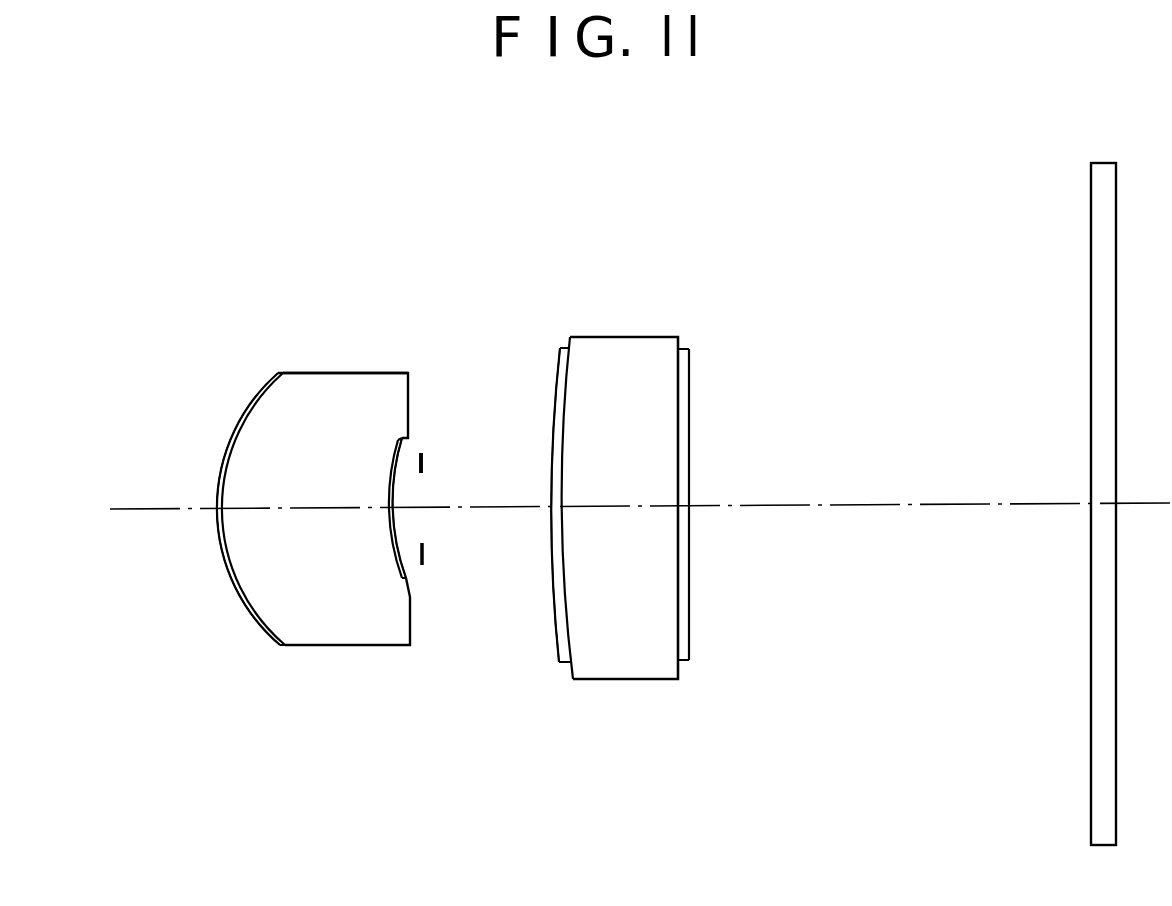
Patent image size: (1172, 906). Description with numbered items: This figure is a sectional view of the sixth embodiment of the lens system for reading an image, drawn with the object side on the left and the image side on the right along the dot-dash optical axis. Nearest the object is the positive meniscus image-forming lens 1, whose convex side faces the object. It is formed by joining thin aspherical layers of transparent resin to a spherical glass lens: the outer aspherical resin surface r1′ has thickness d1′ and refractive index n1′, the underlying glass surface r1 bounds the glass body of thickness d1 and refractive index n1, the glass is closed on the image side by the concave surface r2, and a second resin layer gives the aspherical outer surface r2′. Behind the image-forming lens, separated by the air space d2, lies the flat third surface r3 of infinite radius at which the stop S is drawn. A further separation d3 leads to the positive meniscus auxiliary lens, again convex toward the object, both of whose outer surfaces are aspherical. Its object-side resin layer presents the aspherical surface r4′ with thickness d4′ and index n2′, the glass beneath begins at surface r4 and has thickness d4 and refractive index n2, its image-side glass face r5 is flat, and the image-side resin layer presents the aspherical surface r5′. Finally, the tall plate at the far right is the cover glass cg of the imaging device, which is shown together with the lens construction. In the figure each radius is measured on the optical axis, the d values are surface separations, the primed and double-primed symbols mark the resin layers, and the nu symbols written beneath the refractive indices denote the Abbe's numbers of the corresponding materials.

The first lens 1 is at (336, 392).
The radius of curvature of object-side resin layer surface of image-forming lens r1′ is at (240, 418).
The radius of curvature of first surface r1 is at (260, 400).
The radius of curvature of second surface r2 is at (392, 455).
The radius of curvature of image-side resin layer surface of image-forming lens r2′ is at (410, 455).
The radius of curvature of third surface r3 is at (424, 455).
The radius of curvature of object-side resin layer surface of auxiliary lens r4′ is at (557, 377).
The radius of curvature of fourth surface r4 is at (575, 372).
The radius of curvature of fifth surface r5 is at (681, 372).
The radius of curvature of image-side resin layer surface of auxiliary lens r5′ is at (688, 398).
The refractive index of object-side resin layer of first lens n1′ is at (224, 455).
The refractive index of first lens n1 is at (346, 509).
The refractive index of object-side resin layer of second lens n2′ is at (557, 467).
The refractive index of second lens n2 is at (624, 508).
The thickness of object-side resin layer of first lens d1′ is at (217, 512).
The thickness of first lens d1 is at (317, 510).
The surface separation between image-forming lens and third surface d2 is at (408, 515).
The surface separation between third surface and auxiliary lens d3 is at (502, 510).
The thickness of object-side resin layer of second lens d4′ is at (558, 530).
The thickness of second lens d4 is at (627, 510).
The aperture stop S is at (424, 554).
The cover glass cg is at (1103, 712).